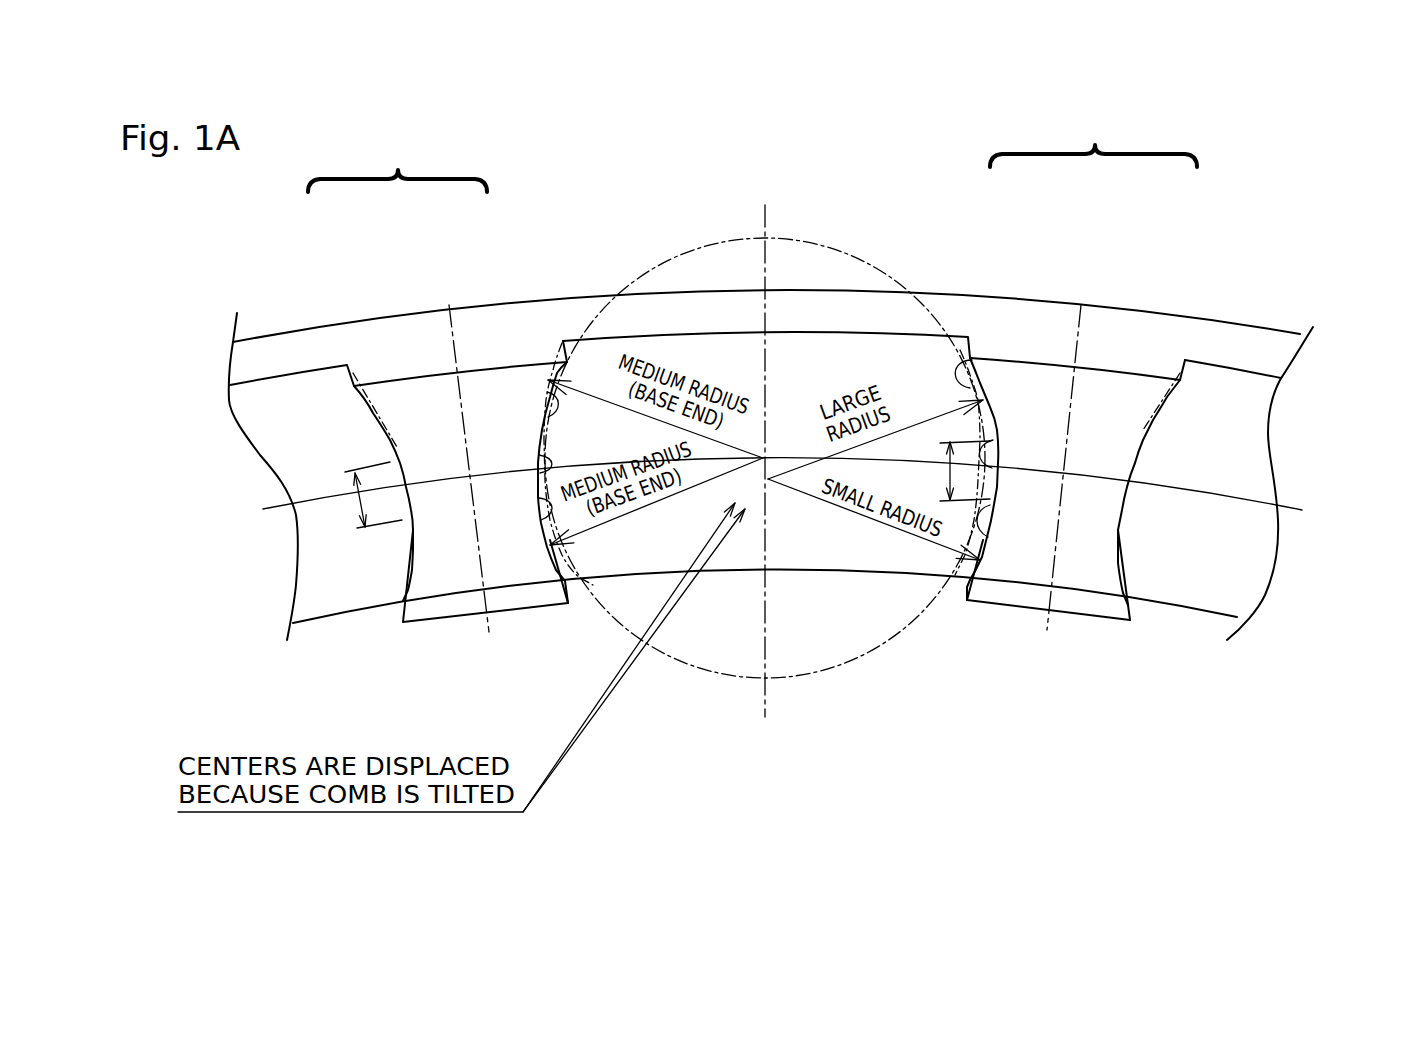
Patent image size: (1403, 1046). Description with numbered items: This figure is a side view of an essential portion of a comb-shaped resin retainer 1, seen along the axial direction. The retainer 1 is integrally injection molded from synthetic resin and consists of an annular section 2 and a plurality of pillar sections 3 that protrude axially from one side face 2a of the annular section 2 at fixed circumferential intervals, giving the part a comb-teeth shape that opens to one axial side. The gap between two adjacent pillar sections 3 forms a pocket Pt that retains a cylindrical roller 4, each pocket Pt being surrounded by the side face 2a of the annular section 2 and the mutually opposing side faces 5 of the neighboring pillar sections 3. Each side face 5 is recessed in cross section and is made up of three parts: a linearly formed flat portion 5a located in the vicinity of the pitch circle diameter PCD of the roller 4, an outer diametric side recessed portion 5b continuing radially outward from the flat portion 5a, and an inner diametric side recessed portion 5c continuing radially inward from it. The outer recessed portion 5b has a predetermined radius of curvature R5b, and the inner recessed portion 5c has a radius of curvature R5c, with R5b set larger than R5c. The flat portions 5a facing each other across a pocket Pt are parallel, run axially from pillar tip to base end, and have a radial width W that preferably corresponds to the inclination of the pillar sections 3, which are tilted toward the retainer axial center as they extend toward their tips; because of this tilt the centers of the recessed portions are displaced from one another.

The comb-shaped resin retainer 1 is at (1219, 273).
The annular section 2 is at (1260, 397).
The side face of the annular section 2a is at (318, 445).
The pillar section 3 is at (462, 560).
The cylindrical roller 4 is at (810, 260).
The side face of the pillar section 5 is at (1193, 650).
The flat portion 5a is at (553, 470).
The outer diametric side recessed portion 5b is at (553, 413).
The inner diametric side recessed portion 5c is at (547, 500).
The radial width of the flat portion W is at (300, 516).
The pocket Pt is at (355, 573).
The pitch circle diameter PCD is at (1288, 512).
The radius of curvature of the outer diametric side recessed portion R5b is at (560, 425).
The radius of curvature of the inner diametric side recessed portion R5c is at (557, 518).